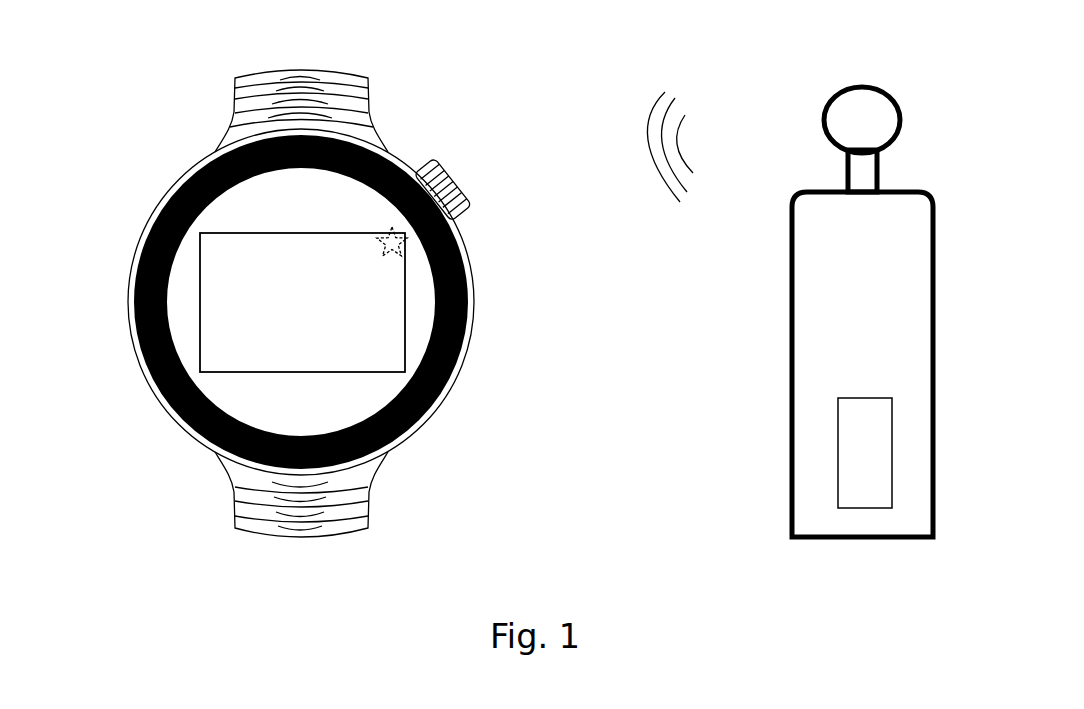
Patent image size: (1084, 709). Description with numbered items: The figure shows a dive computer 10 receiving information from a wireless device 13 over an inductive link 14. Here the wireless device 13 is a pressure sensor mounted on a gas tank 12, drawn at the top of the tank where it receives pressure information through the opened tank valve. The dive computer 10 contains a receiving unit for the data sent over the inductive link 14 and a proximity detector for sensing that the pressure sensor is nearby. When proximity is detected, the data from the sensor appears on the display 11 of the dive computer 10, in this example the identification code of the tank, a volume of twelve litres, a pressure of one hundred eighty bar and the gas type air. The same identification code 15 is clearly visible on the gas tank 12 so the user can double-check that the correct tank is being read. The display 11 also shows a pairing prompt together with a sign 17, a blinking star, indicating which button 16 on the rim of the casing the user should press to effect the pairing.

The dive computer 10 is at (168, 201).
The display 11 is at (258, 233).
The gas tank 12 is at (792, 452).
The wireless device 13 is at (837, 152).
The inductive link 14 is at (687, 107).
The identification code 15 is at (842, 505).
The button 16 is at (464, 196).
The sign 17 is at (393, 227).